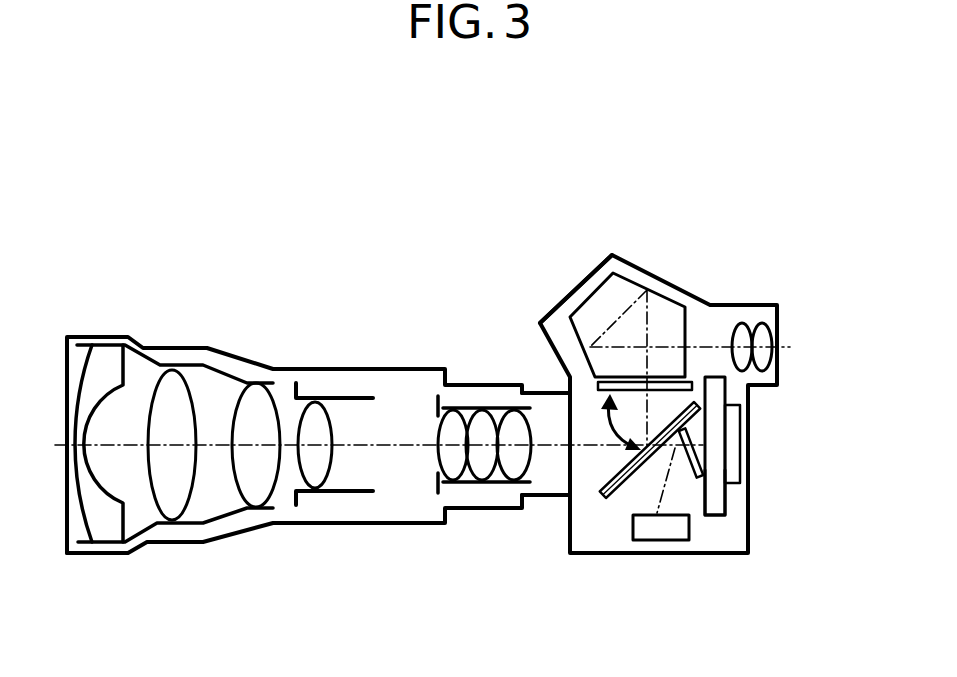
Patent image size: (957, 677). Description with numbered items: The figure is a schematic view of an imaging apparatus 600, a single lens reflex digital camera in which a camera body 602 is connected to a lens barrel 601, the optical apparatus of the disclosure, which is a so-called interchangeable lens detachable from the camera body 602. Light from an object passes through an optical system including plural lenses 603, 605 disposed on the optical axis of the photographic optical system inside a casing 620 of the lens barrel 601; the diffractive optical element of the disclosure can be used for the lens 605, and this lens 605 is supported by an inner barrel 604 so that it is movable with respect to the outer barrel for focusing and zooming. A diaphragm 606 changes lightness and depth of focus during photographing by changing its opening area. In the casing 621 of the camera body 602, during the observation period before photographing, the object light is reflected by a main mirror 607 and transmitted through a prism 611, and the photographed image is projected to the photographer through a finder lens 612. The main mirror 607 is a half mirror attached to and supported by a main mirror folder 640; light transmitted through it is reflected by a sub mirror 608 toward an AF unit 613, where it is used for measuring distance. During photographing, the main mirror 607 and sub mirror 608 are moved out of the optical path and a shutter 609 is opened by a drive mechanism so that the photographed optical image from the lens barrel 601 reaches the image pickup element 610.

The image pickup apparatus (camera system) 600 is at (492, 127).
The lens barrel 601 is at (70, 203).
The camera body 602 is at (562, 203).
The lens 603 is at (130, 337).
The inner barrel 604 is at (327, 393).
The lens 605 is at (313, 470).
The diaphragm 606 is at (437, 394).
The main mirror 607 is at (563, 498).
The sub mirror 608 is at (705, 450).
The shutter 609 is at (717, 500).
The image pickup element 610 is at (732, 468).
The prism 611 is at (677, 318).
The finder lens 612 is at (770, 315).
The AF unit 613 is at (660, 540).
The casing 620 is at (233, 351).
The casing 621 is at (560, 292).
The main mirror folder 640 is at (605, 493).